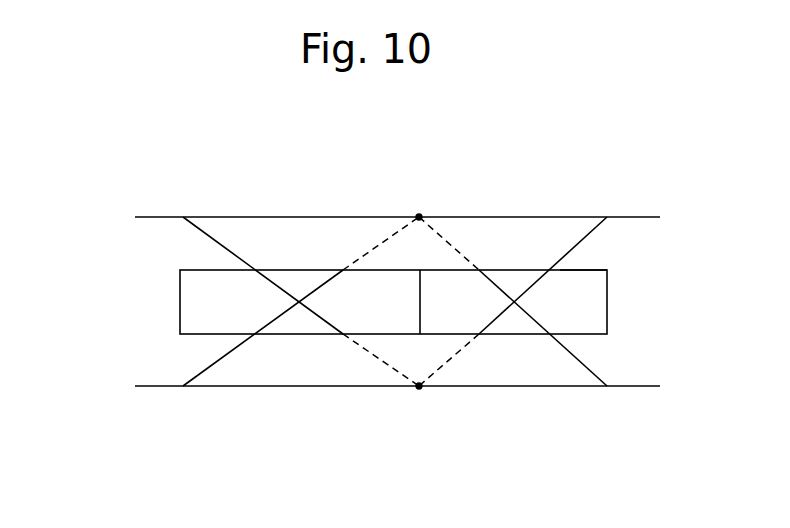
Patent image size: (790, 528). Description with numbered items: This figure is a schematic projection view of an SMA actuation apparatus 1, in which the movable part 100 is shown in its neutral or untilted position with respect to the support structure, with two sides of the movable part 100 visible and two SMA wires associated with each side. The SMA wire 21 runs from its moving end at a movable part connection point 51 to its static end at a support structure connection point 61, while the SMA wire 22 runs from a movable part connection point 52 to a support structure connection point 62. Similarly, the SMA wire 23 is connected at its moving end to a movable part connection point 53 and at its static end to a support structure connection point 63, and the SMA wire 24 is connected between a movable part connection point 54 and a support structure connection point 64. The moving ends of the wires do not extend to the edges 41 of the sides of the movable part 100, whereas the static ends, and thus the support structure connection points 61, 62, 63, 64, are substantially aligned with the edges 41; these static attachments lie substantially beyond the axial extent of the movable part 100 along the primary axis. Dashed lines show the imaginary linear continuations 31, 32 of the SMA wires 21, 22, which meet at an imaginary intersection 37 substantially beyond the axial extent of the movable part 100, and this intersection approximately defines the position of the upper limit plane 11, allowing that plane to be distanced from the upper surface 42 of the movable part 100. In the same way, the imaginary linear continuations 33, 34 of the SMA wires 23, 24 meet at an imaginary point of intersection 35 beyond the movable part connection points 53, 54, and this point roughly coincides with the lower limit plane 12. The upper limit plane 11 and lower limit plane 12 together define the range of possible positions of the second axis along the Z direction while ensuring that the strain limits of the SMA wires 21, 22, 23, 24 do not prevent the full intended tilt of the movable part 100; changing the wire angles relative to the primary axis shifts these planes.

The actuation apparatus 1 is at (68, 175).
The upper limit plane 11 is at (648, 217).
The lower limit plane 12 is at (642, 386).
The SMA wire 21 is at (315, 270).
The SMA wire 22 is at (503, 293).
The SMA wire 23 is at (268, 281).
The SMA wire 24 is at (582, 237).
The imaginary linear continuation 31 is at (392, 238).
The imaginary linear continuation 32 is at (438, 233).
The imaginary linear continuation 33 is at (390, 366).
The imaginary linear continuation 34 is at (446, 364).
The imaginary point of intersection 35 is at (419, 387).
The imaginary intersection 37 is at (419, 217).
The edges 41 is at (420, 300).
The upper surface 42 is at (600, 270).
The movable part connection point 51 is at (347, 270).
The movable part connection point 52 is at (480, 268).
The movable part connection point 53 is at (343, 334).
The movable part connection point 54 is at (480, 334).
The support structure connection point 61 is at (183, 386).
The support structure connection point 62 is at (607, 387).
The support structure connection point 63 is at (183, 217).
The support structure connection point 64 is at (607, 217).
The movable part 100 is at (585, 282).